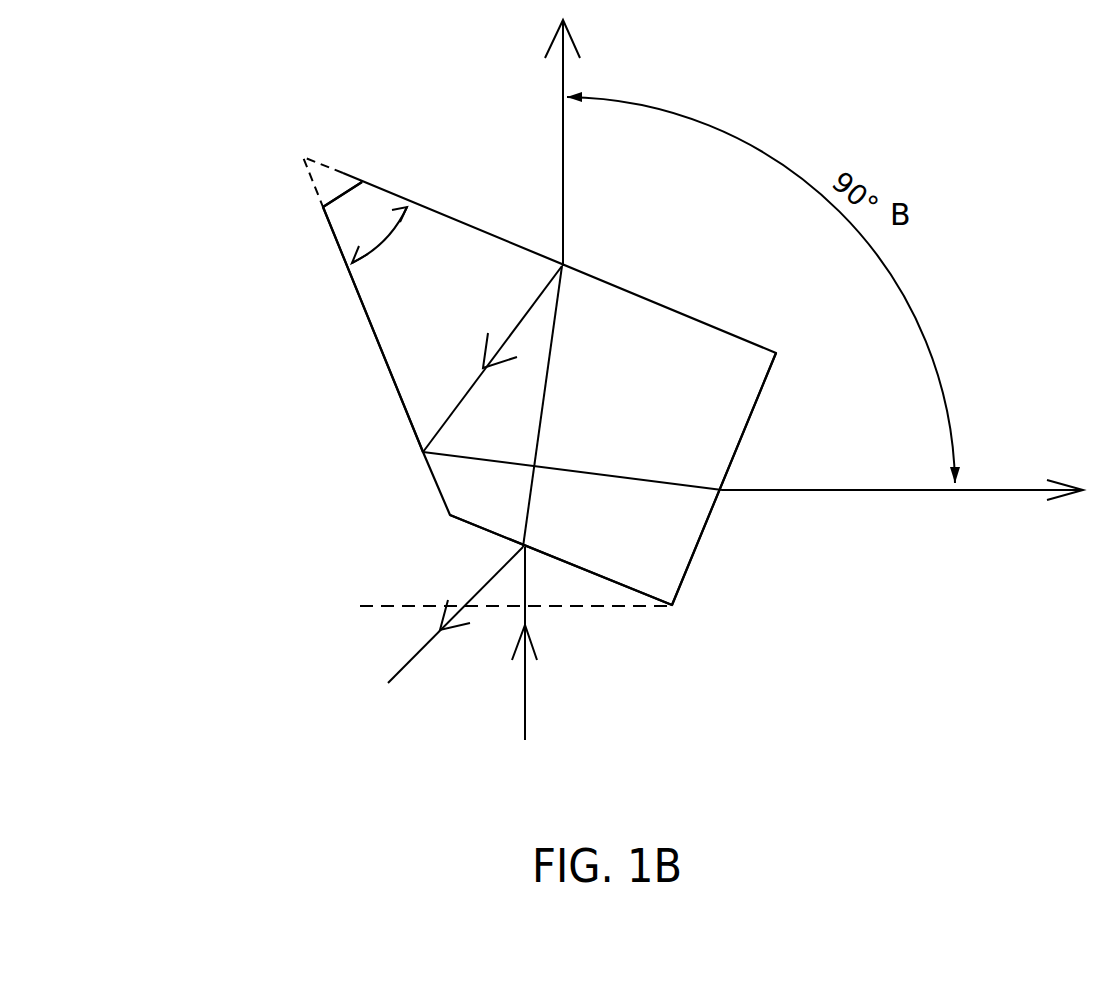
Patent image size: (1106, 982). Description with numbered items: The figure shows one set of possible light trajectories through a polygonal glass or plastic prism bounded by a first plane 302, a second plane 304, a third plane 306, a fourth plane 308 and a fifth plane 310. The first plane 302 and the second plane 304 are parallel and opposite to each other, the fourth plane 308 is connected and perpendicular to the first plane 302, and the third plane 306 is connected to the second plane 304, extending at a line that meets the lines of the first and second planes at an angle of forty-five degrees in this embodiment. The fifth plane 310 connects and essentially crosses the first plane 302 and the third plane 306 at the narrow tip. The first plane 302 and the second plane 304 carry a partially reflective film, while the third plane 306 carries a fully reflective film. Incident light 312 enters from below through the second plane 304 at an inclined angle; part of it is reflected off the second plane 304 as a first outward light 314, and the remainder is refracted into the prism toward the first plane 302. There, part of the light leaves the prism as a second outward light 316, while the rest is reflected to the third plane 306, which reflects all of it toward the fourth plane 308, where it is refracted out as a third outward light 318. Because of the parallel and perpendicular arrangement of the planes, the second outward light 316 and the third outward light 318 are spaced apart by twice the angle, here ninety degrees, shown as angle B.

The first plane 302 is at (427, 207).
The second plane 304 is at (477, 530).
The third plane 306 is at (387, 368).
The fourth plane 308 is at (700, 543).
The fifth plane 310 is at (325, 204).
The incident light 312 is at (525, 685).
The first outward light 314 is at (423, 642).
The second outward light 316 is at (565, 210).
The third outward light 318 is at (863, 491).